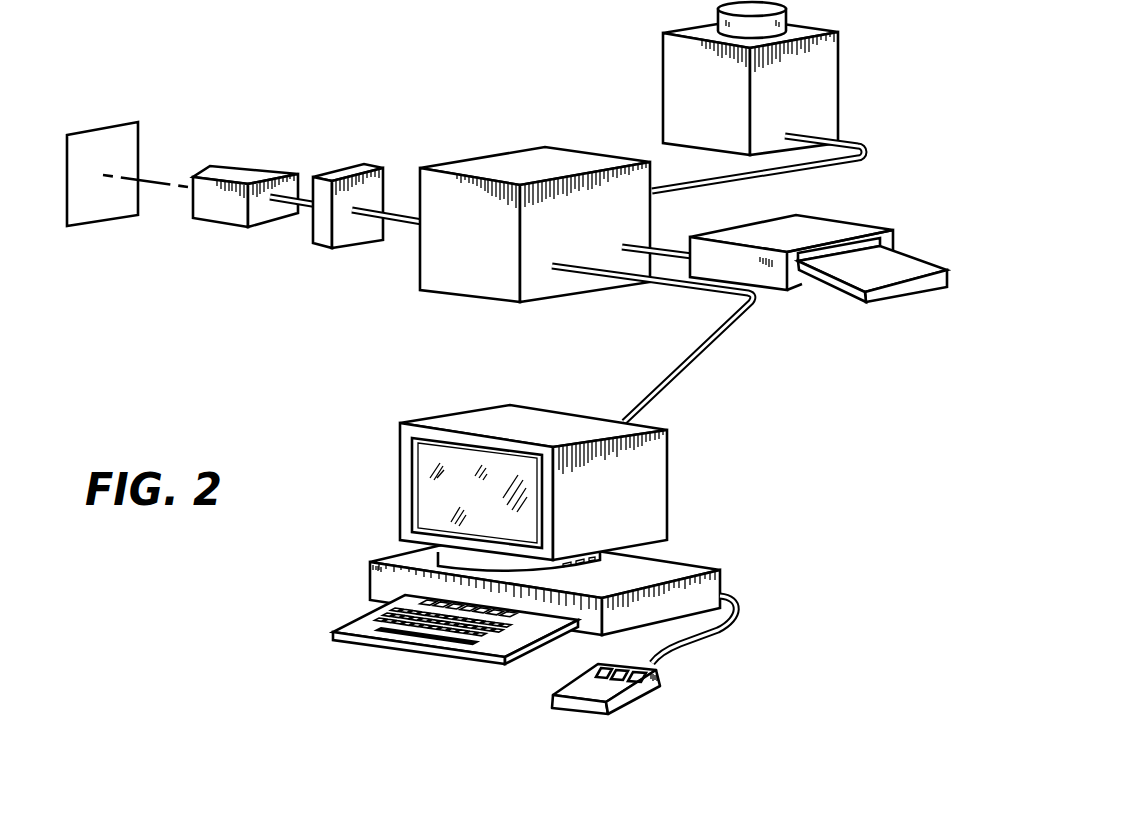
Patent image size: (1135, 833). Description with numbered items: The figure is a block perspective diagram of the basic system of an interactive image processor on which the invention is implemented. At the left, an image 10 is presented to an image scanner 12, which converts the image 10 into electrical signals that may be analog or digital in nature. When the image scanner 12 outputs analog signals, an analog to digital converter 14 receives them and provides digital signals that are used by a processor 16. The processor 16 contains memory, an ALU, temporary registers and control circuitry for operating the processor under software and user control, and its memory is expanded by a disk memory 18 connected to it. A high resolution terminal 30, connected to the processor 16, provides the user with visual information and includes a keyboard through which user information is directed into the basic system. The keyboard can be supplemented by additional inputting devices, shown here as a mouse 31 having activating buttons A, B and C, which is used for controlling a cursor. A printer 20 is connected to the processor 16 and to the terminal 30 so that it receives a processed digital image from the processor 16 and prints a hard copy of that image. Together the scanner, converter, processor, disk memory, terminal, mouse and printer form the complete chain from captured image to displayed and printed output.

The image 10 is at (100, 133).
The image scanner 12 is at (230, 176).
The analog to digital converter 14 is at (368, 234).
The processor 16 is at (588, 160).
The disk memory 18 is at (830, 96).
The printer 20 is at (750, 237).
The high resolution terminal 30 is at (577, 425).
The mouse 31 is at (666, 687).
The activating button A is at (597, 672).
The activating button B is at (622, 668).
The activating button C is at (650, 673).